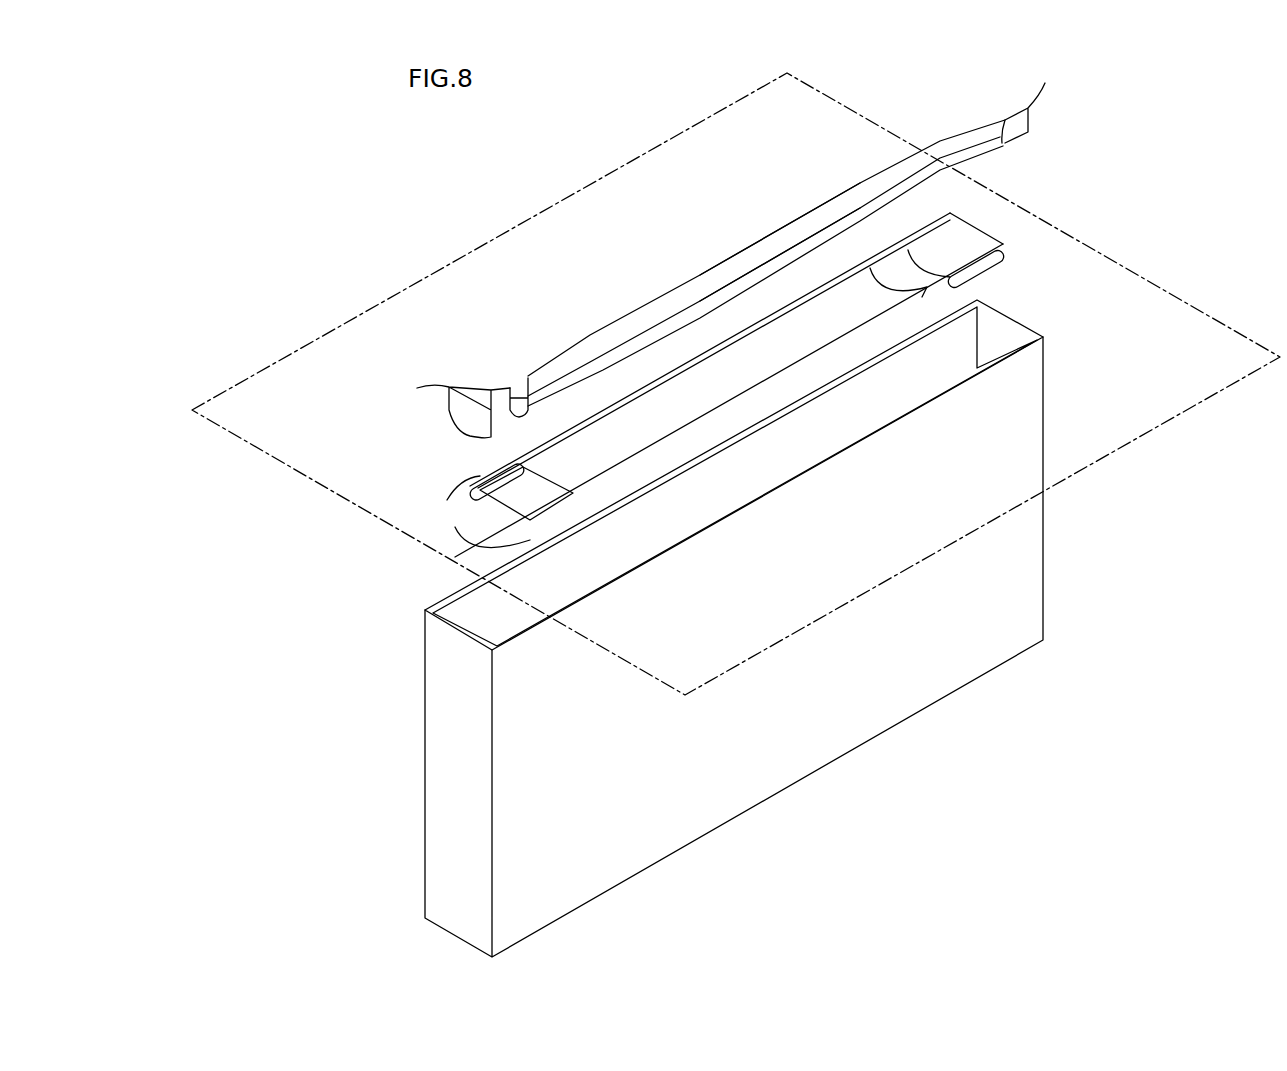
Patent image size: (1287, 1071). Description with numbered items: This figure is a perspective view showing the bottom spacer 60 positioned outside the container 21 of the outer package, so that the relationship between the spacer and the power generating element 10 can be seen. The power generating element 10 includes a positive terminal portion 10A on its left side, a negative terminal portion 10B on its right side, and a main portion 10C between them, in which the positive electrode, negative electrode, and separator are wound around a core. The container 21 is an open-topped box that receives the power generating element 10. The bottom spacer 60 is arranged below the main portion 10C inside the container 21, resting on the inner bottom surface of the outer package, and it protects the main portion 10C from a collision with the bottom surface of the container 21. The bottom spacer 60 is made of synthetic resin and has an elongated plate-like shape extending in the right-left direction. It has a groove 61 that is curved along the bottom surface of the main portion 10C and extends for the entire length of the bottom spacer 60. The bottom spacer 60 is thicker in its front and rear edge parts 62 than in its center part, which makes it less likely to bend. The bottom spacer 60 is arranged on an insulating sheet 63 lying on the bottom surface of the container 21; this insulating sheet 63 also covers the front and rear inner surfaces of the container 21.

The power generating element 10 is at (750, 279).
The positive terminal portion 10A is at (503, 415).
The negative terminal portion 10B is at (1018, 127).
The main portion 10C is at (765, 252).
The container 21 is at (1020, 571).
The bottom spacer 60 is at (953, 254).
The groove 61 is at (865, 307).
The front and rear edge parts 62 is at (468, 561).
The insulating sheet 63 is at (1203, 350).